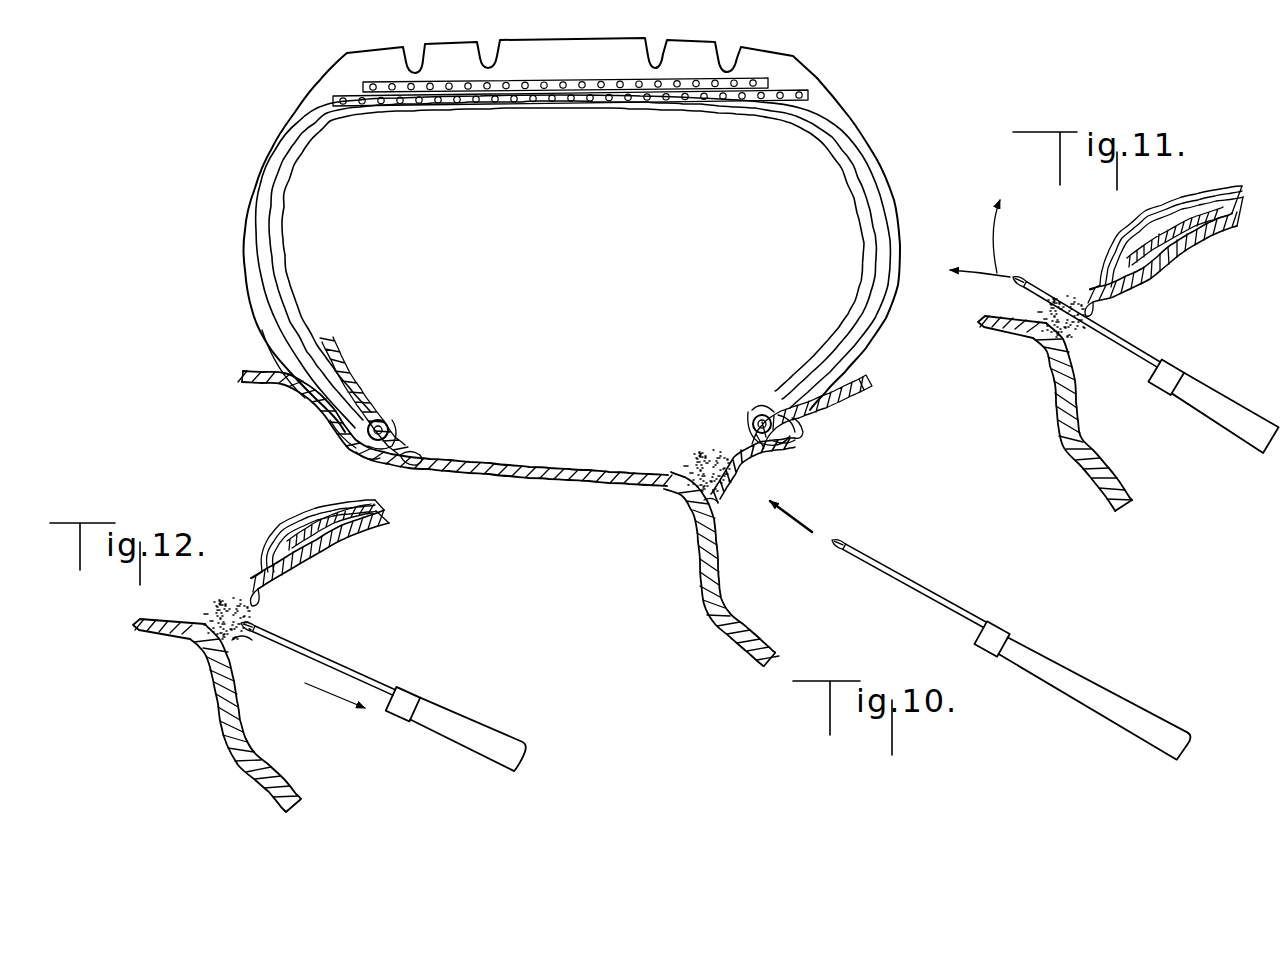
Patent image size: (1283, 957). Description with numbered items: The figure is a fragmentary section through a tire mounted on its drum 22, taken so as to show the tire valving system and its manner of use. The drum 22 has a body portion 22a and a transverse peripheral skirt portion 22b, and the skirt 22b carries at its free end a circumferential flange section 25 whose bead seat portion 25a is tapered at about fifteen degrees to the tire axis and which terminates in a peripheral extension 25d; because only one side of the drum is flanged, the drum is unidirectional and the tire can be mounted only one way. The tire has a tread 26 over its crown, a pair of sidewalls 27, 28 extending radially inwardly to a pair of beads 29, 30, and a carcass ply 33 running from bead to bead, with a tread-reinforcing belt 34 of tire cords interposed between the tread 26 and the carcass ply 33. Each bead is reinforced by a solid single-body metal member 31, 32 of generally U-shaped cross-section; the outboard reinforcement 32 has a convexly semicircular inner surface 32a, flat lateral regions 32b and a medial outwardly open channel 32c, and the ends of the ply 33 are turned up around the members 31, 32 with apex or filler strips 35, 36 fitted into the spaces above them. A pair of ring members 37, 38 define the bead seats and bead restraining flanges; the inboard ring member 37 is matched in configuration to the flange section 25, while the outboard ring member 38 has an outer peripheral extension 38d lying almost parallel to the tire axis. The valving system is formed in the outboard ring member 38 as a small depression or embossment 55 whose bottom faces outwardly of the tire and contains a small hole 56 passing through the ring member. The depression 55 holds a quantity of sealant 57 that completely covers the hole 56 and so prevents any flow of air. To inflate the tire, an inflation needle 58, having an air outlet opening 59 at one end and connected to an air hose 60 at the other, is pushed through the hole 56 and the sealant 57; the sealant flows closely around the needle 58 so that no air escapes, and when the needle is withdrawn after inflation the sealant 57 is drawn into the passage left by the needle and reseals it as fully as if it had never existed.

In FIG. 10, the drum 22 is at (521, 518).
In FIG. 11, the body portion 22a is at (1057, 408).
In FIG. 12, the body portion 22a is at (228, 708).
In FIG. 10, the transverse peripheral skirt portion 22b is at (528, 479).
In FIG. 10, the circumferential flange section 25 is at (334, 432).
In FIG. 10, the bead seat portion of flange section 25a is at (404, 470).
In FIG. 10, the peripheral extension 25d is at (260, 392).
In FIG. 10, the tread 26 is at (800, 80).
In FIG. 10, the sidewall 27 is at (245, 232).
In FIG. 10, the sidewall 28 is at (892, 212).
In FIG. 10, the bead 29 is at (405, 425).
In FIG. 10, the bead 30 is at (745, 413).
In FIG. 10, the bead reinforcement metal member 31 is at (356, 455).
In FIG. 10, the bead reinforcement metal member 32 is at (750, 425).
In FIG. 10, the inner surface 32a is at (790, 447).
In FIG. 10, the flat lateral regions 32b is at (798, 416).
In FIG. 10, the medial channel 32c is at (756, 418).
In FIG. 10, the carcass ply 33 is at (290, 157).
In FIG. 10, the tread-reinforcing belt 34 is at (792, 90).
In FIG. 10, the apex or filler strip 35 is at (320, 370).
In FIG. 10, the apex or filler strip 36 is at (820, 367).
In FIG. 10, the ring member 37 is at (254, 369).
In FIG. 10, the ring member 38 is at (804, 433).
In FIG. 11, the ring member 38 is at (1152, 292).
In FIG. 12, the ring member 38 is at (322, 578).
In FIG. 10, the outer peripheral extension 38d is at (868, 385).
In FIG. 10, the depression or embossment 55 is at (730, 503).
In FIG. 12, the depression or embossment 55 is at (242, 646).
In FIG. 10, the hole 56 is at (758, 485).
In FIG. 10, the sealant 57 is at (704, 458).
In FIG. 11, the sealant 57 is at (1061, 316).
In FIG. 12, the sealant 57 is at (228, 600).
In FIG. 10, the inflation needle 58 is at (927, 595).
In FIG. 11, the inflation needle 58 is at (1140, 362).
In FIG. 12, the inflation needle 58 is at (350, 665).
In FIG. 10, the air outlet opening 59 is at (848, 548).
In FIG. 10, the air hose 60 is at (1023, 637).
In FIG. 11, the air hose 60 is at (1208, 392).
In FIG. 12, the air hose 60 is at (462, 713).